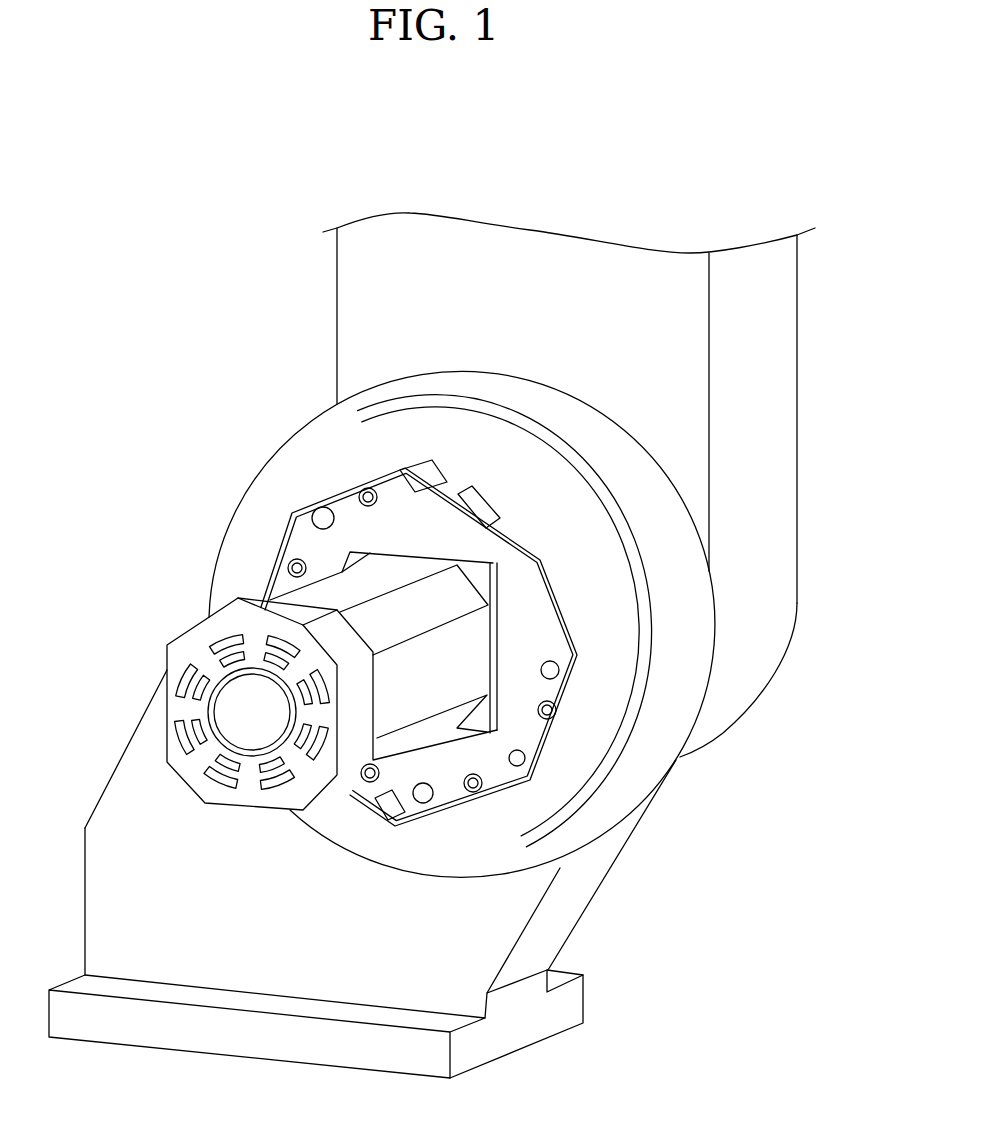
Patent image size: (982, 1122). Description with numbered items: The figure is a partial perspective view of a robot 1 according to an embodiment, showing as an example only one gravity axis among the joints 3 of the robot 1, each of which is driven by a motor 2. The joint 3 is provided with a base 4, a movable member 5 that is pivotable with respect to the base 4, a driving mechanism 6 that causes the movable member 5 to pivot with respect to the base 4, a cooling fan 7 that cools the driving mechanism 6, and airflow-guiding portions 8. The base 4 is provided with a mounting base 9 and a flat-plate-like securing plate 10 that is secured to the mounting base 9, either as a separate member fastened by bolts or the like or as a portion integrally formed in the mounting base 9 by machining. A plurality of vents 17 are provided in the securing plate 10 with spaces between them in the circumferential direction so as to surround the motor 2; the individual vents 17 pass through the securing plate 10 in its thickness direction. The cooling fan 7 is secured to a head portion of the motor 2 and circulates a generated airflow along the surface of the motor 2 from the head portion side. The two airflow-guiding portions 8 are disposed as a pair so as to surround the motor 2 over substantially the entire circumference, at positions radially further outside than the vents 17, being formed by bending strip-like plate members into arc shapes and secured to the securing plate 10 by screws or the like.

The robot 1 is at (154, 242).
The motor 2 is at (458, 656).
The joint 3 is at (707, 779).
The base 4 is at (690, 719).
The movable member 5 is at (760, 423).
The driving mechanism 6 is at (290, 513).
The cooling fan 7 is at (178, 637).
The airflow-guiding portions 8 is at (366, 533).
The mounting base 9 is at (680, 613).
The securing plate 10 is at (643, 655).
The vents 17 is at (287, 523).